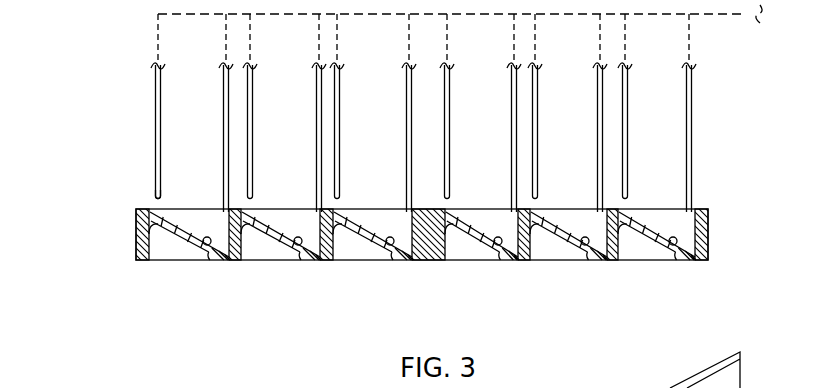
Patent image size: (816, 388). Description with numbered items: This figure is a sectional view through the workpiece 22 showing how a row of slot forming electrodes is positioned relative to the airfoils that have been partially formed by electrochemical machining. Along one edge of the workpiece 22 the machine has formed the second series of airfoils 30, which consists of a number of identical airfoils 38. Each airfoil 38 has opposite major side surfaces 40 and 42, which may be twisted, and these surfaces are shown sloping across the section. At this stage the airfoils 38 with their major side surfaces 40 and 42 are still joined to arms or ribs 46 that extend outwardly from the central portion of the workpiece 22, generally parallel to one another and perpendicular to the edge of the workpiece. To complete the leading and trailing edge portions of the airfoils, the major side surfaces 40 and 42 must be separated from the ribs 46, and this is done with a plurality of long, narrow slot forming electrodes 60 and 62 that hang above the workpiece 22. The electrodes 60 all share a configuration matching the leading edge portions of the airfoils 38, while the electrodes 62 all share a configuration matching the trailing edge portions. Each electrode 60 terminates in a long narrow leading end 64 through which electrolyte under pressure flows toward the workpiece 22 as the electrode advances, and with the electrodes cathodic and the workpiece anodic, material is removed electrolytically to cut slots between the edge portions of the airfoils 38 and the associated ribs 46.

The workpiece 22 is at (404, 162).
The second series of airfoils 30 is at (435, 235).
The airfoil 38 is at (182, 227).
The major side surface 40 is at (204, 254).
The major side surface 42 is at (207, 247).
The rib 46 is at (146, 260).
The slot forming electrode 60 is at (377, 108).
The slot forming electrode 62 is at (222, 107).
The leading end 64 is at (156, 200).